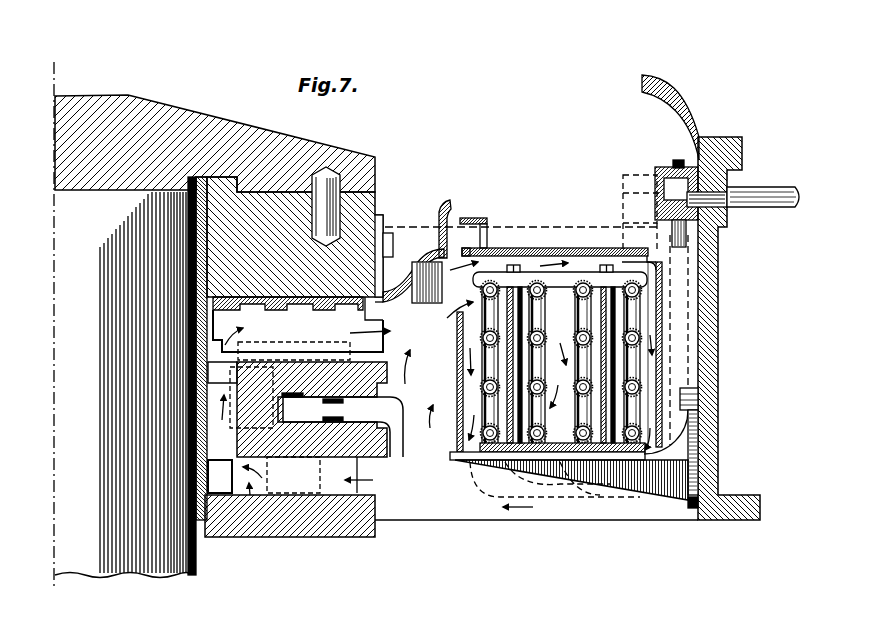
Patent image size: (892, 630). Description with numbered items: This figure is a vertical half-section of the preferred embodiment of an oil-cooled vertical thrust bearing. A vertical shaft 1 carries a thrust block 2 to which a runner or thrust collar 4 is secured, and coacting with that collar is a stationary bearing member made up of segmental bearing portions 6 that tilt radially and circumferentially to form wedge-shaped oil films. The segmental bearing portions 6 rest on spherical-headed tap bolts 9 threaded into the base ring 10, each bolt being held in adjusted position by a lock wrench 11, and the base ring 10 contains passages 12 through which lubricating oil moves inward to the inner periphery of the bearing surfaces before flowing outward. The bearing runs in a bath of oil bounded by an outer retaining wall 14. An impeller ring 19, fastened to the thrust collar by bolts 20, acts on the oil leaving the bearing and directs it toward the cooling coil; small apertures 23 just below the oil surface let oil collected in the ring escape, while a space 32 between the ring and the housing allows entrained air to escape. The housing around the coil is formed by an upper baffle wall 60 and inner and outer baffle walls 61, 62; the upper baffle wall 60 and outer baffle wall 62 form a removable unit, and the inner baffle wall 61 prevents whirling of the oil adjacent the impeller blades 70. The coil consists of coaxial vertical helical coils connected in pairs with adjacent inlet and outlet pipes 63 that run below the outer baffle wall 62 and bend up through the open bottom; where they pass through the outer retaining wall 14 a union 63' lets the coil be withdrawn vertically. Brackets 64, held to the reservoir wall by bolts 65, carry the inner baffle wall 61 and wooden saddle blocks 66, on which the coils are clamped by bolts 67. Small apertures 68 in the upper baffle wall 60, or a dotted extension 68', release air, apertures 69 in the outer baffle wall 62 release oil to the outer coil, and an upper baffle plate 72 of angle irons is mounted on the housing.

The vertical shaft 1 is at (108, 562).
The thrust block 2 is at (277, 147).
The thrust collar 4 is at (281, 206).
The segmental bearing portions 6 is at (298, 335).
The tap bolts 9 is at (322, 470).
The base ring 10 is at (350, 522).
The lock wrench 11 is at (384, 413).
The passages 12 is at (248, 484).
The outer retaining wall 14 is at (712, 437).
The impeller ring 19 is at (405, 262).
The bolts 20 is at (390, 233).
The small apertures 23 is at (438, 228).
The space 32 is at (458, 248).
The upper baffle wall 60 is at (560, 327).
The inner baffle wall 61 is at (458, 380).
The outer baffle wall 62 is at (663, 343).
The inlet and outlet pipes 63 is at (712, 340).
The union 63' is at (720, 161).
The brackets 64 is at (690, 470).
The bolts 65 is at (693, 398).
The saddle blocks 66 is at (458, 448).
The bolts 67 is at (607, 318).
The small apertures 68 is at (559, 232).
The extension 68' is at (522, 209).
The apertures 69 is at (655, 313).
The impeller blades 70 is at (428, 303).
The upper baffle plate 72 is at (473, 220).